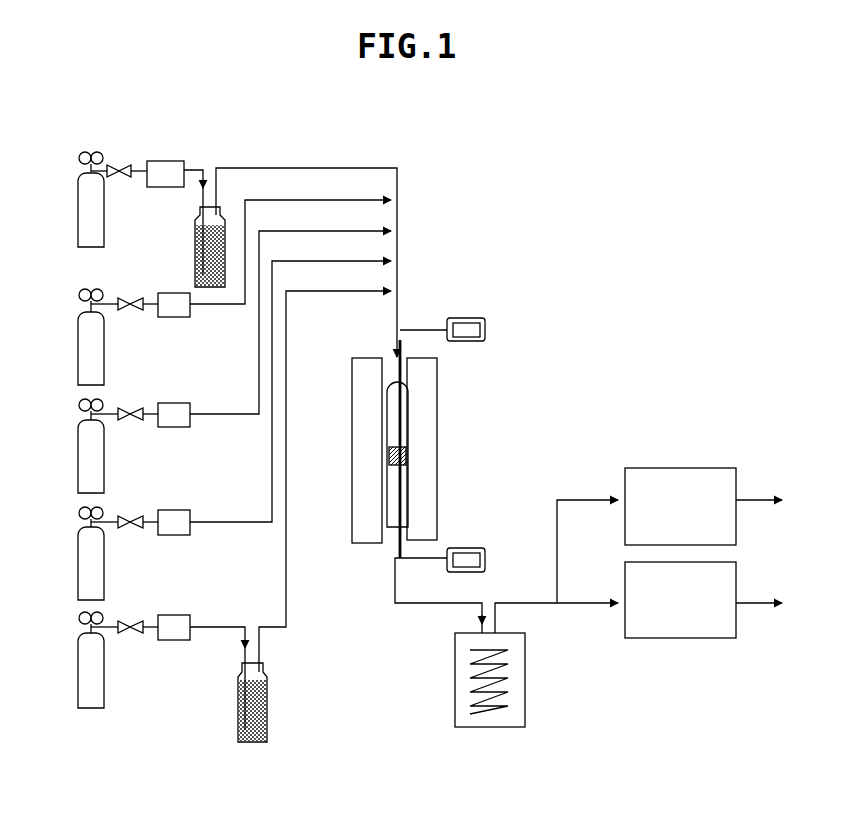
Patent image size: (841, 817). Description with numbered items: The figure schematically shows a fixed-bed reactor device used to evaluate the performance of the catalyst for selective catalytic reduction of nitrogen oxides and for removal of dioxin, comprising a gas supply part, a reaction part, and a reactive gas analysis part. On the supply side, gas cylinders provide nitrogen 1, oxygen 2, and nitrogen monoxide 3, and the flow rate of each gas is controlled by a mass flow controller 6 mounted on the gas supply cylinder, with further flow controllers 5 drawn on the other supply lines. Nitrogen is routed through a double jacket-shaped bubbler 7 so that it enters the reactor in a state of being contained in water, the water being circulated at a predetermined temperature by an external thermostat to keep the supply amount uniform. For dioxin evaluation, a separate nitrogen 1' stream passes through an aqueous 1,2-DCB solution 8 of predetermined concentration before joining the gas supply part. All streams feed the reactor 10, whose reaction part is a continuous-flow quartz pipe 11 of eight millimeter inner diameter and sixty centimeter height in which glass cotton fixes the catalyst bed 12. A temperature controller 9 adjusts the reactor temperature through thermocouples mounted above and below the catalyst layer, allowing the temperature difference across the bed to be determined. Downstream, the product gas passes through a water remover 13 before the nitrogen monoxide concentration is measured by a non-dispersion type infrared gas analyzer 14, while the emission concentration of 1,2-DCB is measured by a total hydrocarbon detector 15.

The nitrogen 1 is at (63, 199).
The nitrogen 1' is at (60, 660).
The oxygen 2 is at (79, 350).
The nitrogen monoxide 3 is at (79, 460).
The mass flow controller 5 is at (176, 293).
The mass flow controller 6 is at (176, 161).
The bubbler 7 is at (196, 236).
The aqueous 1,2-DCB solution 8 is at (238, 690).
The temperature controller 9 is at (472, 318).
The reactor 10 is at (429, 394).
The quartz pipe 11 is at (406, 418).
The catalyst bed 12 is at (405, 462).
The water remover 13 is at (455, 678).
The infrared gas analyzer 14 is at (690, 622).
The total hydrocarbon detector 15 is at (682, 490).